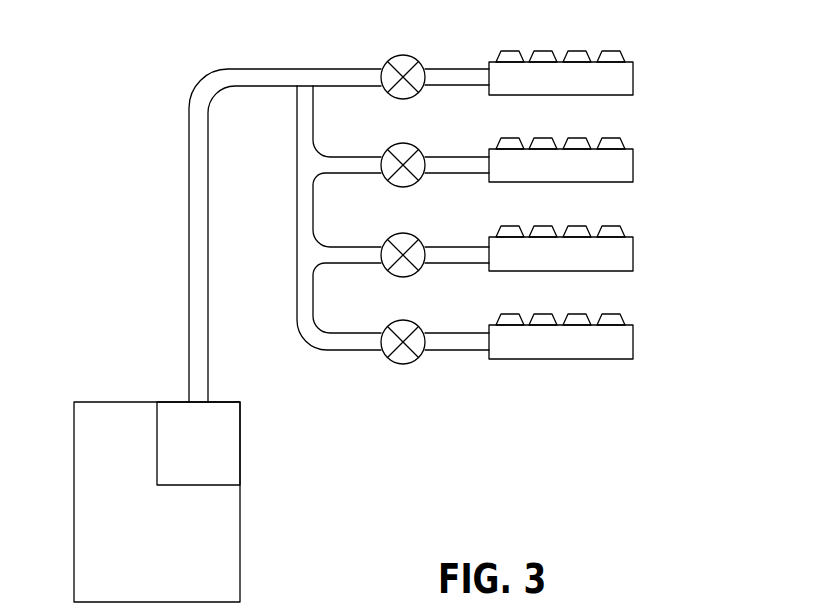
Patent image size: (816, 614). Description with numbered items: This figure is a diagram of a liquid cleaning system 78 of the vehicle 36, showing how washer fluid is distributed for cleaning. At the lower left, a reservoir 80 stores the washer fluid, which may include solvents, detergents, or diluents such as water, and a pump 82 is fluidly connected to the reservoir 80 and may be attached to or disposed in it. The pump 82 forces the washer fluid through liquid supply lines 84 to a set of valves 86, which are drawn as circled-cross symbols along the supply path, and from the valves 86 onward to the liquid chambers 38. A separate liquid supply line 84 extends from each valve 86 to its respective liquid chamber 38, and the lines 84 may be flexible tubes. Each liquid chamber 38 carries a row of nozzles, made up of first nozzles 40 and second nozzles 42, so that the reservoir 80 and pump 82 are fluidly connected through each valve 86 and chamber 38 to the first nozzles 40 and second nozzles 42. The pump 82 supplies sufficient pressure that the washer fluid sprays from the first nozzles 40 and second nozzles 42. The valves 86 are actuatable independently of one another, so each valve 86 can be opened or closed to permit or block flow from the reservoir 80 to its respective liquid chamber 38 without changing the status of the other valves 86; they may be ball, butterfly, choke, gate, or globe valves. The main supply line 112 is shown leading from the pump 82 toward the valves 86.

The gas turbine engine section 36 is at (668, 604).
The liquid chamber 38 is at (633, 162).
The first nozzle 40 is at (576, 314).
The second nozzle 42 is at (612, 51).
The liquid cleaning system 78 is at (379, 420).
The reservoir 80 is at (240, 541).
The pump 82 is at (240, 441).
The liquid supply line 84 is at (452, 157).
The valve 86 is at (393, 145).
The fuel supply line 112 is at (267, 88).